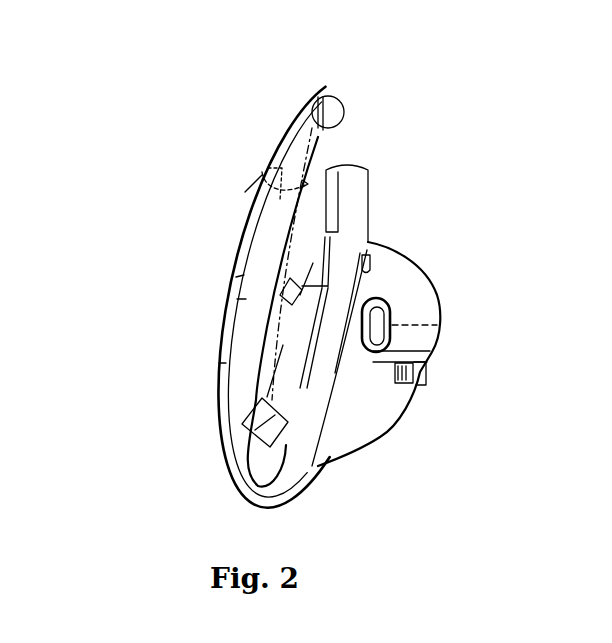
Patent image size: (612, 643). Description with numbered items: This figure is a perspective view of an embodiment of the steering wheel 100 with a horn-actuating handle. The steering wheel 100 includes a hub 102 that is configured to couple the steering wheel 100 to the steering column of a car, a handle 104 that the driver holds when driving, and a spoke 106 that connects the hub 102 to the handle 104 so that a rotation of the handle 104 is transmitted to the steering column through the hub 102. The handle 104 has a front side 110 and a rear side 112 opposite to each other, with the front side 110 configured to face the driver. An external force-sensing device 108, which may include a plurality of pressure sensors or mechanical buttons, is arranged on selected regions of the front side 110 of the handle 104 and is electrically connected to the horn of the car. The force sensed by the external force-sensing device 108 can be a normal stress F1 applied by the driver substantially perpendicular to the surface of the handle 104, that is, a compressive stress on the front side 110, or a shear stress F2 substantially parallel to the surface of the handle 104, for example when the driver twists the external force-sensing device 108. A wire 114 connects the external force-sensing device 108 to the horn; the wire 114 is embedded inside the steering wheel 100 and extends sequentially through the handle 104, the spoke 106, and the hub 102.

The steering wheel 100 is at (247, 270).
The hub 102 is at (248, 398).
The handle 104 is at (228, 360).
The spoke 106 is at (236, 277).
The external force-sensing device 108 is at (299, 113).
The front side 110 is at (330, 147).
The rear side 112 is at (345, 115).
The wire 114 is at (245, 192).
The normal stress F1 is at (232, 297).
The shear stress F2 is at (270, 168).